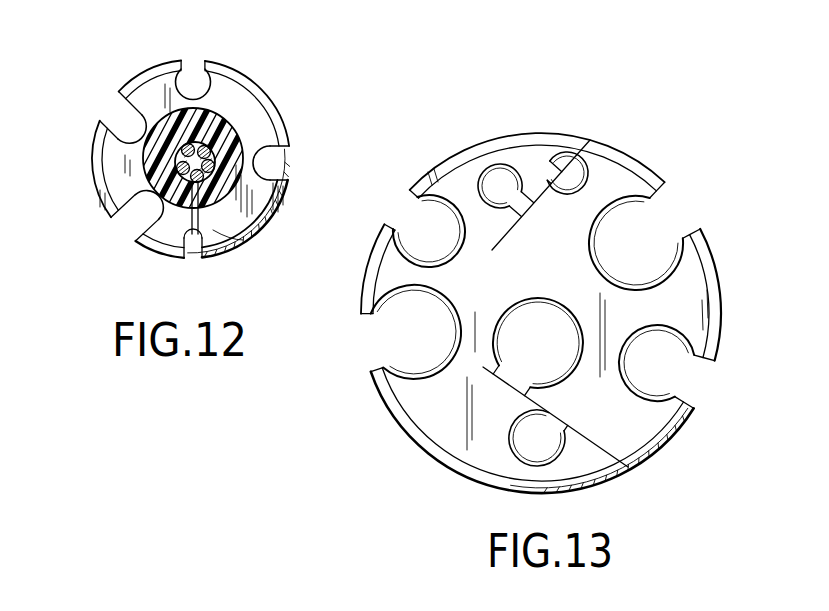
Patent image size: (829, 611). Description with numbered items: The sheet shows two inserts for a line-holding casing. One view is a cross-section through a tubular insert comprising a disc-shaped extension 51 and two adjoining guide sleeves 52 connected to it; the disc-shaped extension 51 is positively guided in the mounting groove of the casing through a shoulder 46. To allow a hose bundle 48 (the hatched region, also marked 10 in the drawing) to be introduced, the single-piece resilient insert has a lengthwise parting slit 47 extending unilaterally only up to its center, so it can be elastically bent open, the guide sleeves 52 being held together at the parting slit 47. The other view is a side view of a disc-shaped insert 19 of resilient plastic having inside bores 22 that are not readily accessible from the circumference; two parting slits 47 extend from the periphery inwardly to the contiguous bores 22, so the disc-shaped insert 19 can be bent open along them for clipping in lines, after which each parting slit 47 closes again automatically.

In FIG. 12, the connector body 10 is at (264, 129).
In FIG. 12, the hose bundle 48 is at (222, 137).
In FIG. 13, the disc-shaped insert 19 is at (536, 304).
In FIG. 12, the bore 22 is at (195, 72).
In FIG. 13, the bore 22 is at (652, 220).
In FIG. 12, the shoulder 46 is at (100, 143).
In FIG. 13, the shoulder 46 is at (522, 134).
In FIG. 12, the parting slit 47 is at (215, 230).
In FIG. 13, the parting slit 47 is at (590, 140).
In FIG. 12, the disc-shaped extension 51 is at (168, 243).
In FIG. 12, the guide sleeve 52 is at (157, 170).